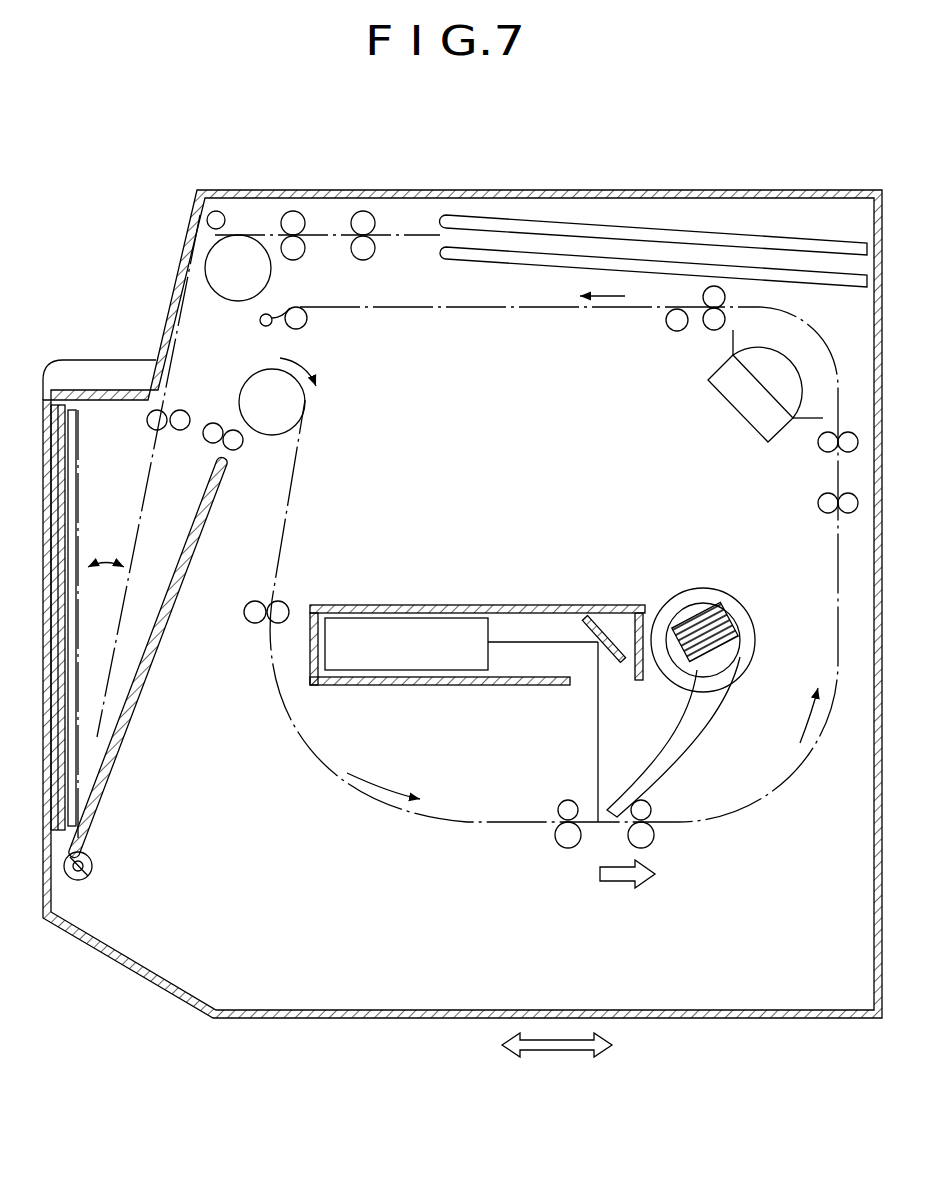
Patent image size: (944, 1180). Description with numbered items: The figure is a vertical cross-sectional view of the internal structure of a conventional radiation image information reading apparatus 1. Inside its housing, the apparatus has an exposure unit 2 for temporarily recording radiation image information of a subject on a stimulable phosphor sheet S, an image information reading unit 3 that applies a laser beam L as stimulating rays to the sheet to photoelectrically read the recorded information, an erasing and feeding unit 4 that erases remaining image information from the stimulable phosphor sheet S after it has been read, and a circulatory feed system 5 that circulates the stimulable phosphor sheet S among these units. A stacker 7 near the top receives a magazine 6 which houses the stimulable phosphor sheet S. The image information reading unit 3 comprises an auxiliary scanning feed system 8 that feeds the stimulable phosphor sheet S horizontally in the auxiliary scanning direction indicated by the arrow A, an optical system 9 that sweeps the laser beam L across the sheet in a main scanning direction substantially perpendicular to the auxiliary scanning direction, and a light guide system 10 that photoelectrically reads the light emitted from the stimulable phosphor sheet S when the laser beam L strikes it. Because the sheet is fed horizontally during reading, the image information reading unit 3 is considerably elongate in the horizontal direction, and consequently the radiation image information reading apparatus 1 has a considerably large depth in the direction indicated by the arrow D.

The radiation image information reading apparatus 1 is at (838, 84).
The exposure unit 2 is at (80, 352).
The image information reading unit 3 is at (542, 657).
The erasing and feeding unit 4 is at (848, 343).
The circulatory feed system 5 is at (396, 216).
The magazine 6 is at (733, 233).
The stacker 7 is at (672, 210).
The auxiliary scanning feed system 8 is at (584, 851).
The optical system 9 is at (404, 592).
The light guide system 10 is at (708, 720).
The stimulable phosphor sheet S is at (187, 518).
The laser beam L is at (598, 735).
The auxiliary scanning direction A is at (639, 877).
The depth direction D is at (557, 1062).